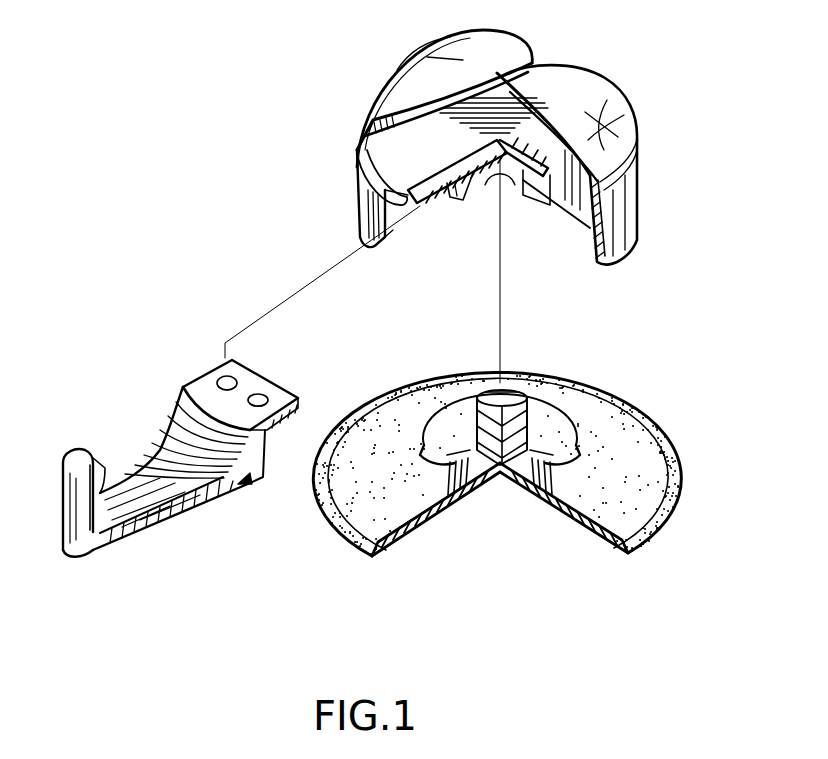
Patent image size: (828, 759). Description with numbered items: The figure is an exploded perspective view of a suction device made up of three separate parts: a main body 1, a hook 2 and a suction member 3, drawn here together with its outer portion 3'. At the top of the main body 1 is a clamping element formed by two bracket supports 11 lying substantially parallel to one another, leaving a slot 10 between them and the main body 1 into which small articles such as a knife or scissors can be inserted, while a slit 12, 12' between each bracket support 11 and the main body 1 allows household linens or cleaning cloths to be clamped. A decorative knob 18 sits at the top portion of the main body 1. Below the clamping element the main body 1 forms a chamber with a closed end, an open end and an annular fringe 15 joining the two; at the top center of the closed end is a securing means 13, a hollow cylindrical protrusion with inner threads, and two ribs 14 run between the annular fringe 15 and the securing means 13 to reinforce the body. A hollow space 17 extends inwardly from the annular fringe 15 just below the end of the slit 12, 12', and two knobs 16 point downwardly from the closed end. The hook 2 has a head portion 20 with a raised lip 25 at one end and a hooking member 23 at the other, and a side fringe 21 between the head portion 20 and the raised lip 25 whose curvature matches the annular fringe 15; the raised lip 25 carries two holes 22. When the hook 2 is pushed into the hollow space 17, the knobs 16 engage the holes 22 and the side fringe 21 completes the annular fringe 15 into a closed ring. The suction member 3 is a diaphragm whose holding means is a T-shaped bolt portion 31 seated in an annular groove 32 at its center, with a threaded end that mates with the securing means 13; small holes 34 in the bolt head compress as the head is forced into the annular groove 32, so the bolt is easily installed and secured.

The main body 1 is at (362, 70).
The slot 10 is at (538, 68).
The bracket supports 11 is at (510, 42).
The slit 12 is at (353, 185).
The slit 12' is at (545, 191).
The securing means 13 is at (478, 182).
The ribs 14 is at (568, 218).
The annular fringe 15 is at (590, 248).
The knobs 16 is at (423, 208).
The hollow space 17 is at (393, 230).
The decorative knob 18 is at (603, 85).
The hook 2 is at (155, 410).
The head portion 20 is at (157, 507).
The side fringe 21 is at (243, 487).
The holes 22 is at (260, 396).
The hooking member 23 is at (73, 463).
The raised lip 25 is at (228, 378).
The suction member 3 is at (497, 442).
The rim flange 3' is at (498, 437).
The T-shaped bolt portion 31 is at (502, 390).
The annular groove 32 is at (540, 473).
The small holes 34 is at (487, 478).